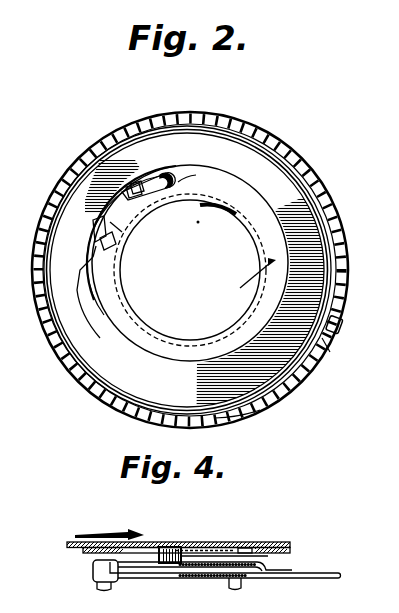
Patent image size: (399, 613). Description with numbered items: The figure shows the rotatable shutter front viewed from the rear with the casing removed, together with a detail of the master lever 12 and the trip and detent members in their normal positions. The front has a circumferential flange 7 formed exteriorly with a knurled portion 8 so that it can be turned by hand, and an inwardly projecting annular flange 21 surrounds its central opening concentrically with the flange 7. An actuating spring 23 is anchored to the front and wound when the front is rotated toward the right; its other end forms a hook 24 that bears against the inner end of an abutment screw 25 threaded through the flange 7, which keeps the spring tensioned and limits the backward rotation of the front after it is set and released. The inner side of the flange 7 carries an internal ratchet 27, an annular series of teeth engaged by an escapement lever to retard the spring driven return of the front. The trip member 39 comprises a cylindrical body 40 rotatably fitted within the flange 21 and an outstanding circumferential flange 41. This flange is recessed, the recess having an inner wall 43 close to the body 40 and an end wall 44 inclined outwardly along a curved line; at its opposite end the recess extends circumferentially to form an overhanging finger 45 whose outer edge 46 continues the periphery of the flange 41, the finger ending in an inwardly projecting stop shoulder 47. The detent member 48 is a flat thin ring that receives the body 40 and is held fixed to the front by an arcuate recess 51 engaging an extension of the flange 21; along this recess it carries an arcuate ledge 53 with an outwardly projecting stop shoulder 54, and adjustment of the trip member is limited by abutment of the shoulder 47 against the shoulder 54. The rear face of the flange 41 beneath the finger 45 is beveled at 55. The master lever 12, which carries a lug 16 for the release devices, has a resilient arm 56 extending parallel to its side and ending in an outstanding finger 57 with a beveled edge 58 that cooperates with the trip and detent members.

In FIG. 2, the circumferential flange 7 is at (152, 119).
In FIG. 2, the circumferential knurled portion 8 is at (201, 116).
In FIG. 4, the master lever 12 is at (303, 578).
In FIG. 4, the lug 16 is at (107, 588).
In FIG. 4, the inwardly projecting annular flange 21 is at (144, 595).
In FIG. 2, the actuating spring 23 is at (110, 141).
In FIG. 2, the hook 24 is at (321, 343).
In FIG. 2, the abutment screw 25 is at (339, 326).
In FIG. 2, the internal ratchet 27 is at (235, 409).
In FIG. 2, the trip member 39 is at (246, 282).
In FIG. 2, the cylindrical body 40 is at (132, 316).
In FIG. 2, the outstanding circumferential flange 41 is at (217, 343).
In FIG. 4, the outstanding circumferential flange 41 is at (95, 556).
In FIG. 2, the inner wall of recess 43 is at (118, 228).
In FIG. 2, the end wall of recess 44 is at (79, 277).
In FIG. 2, the overhanging finger 45 is at (195, 167).
In FIG. 4, the overhanging finger 45 is at (150, 542).
In FIG. 2, the outer edge of finger 46 is at (161, 179).
In FIG. 2, the stop shoulder 47 is at (129, 186).
In FIG. 2, the detent member 48 is at (270, 176).
In FIG. 4, the detent member 48 is at (72, 541).
In FIG. 2, the arcuate recess 51 is at (104, 240).
In FIG. 2, the arcuate ledge 53 is at (103, 220).
In FIG. 4, the arcuate ledge 53 is at (229, 548).
In FIG. 2, the stop shoulder 54 is at (135, 192).
In FIG. 2, the bevel 55 is at (186, 175).
In FIG. 4, the bevel 55 is at (120, 551).
In FIG. 4, the arm 56 is at (268, 548).
In FIG. 4, the outstanding finger 57 is at (207, 547).
In FIG. 4, the beveled outer edge 58 is at (172, 547).